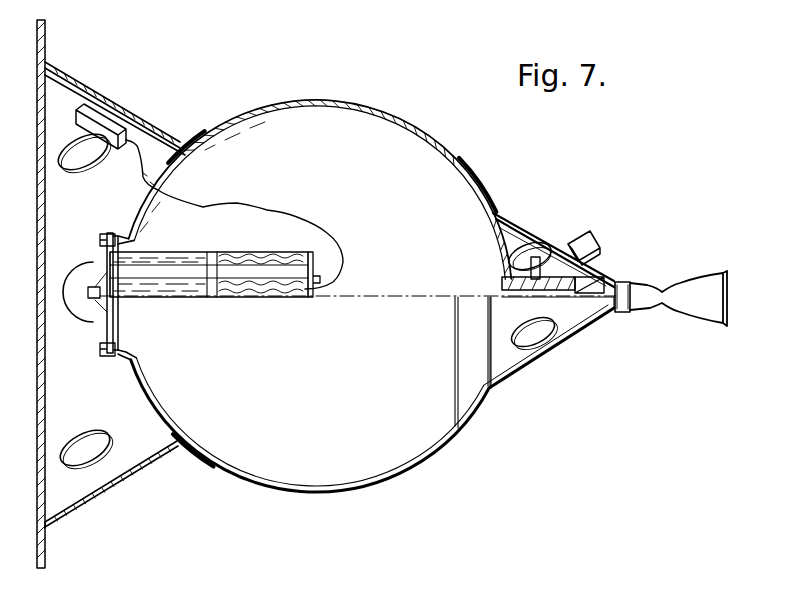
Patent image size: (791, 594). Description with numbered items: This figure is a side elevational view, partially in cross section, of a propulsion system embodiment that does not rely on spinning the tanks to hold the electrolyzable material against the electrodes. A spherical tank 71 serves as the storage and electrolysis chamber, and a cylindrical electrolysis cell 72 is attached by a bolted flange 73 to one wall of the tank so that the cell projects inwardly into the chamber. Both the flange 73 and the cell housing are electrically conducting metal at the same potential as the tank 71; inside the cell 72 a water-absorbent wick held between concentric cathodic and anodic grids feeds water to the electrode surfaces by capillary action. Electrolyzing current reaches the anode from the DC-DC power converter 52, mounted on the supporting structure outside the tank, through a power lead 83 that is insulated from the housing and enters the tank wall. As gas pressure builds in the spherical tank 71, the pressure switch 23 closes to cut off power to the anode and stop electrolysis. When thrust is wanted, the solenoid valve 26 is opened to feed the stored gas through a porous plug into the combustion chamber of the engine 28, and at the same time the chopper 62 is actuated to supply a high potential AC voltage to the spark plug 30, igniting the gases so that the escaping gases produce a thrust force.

The DC-DC power converter 52 is at (115, 130).
The power lead 83 is at (277, 214).
The cylindrical electrolysis cell 72 is at (306, 248).
The bolted flange 73 is at (103, 322).
The spherical tank 71 is at (426, 430).
The pressure switch 23 is at (538, 266).
The chopper 62 is at (588, 246).
The spark plug 30 is at (631, 281).
The engine 28 is at (668, 287).
The solenoid valve 26 is at (597, 293).